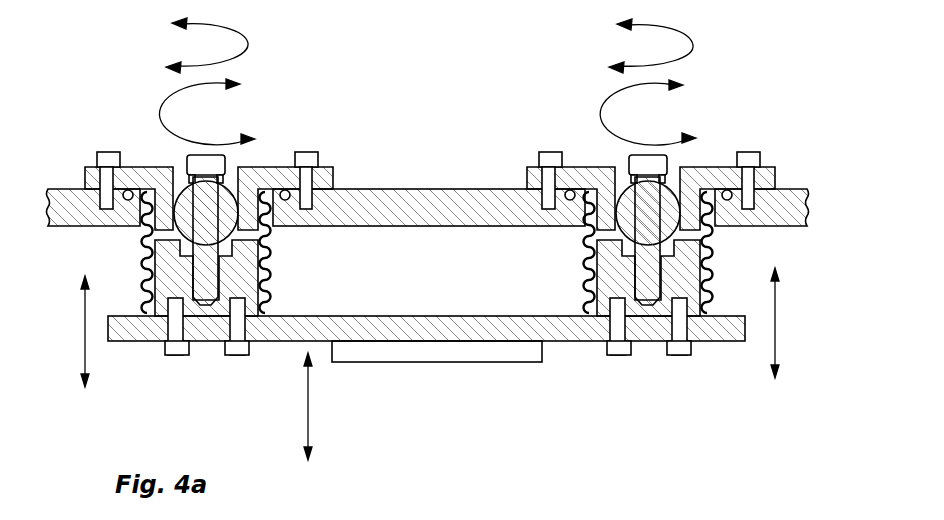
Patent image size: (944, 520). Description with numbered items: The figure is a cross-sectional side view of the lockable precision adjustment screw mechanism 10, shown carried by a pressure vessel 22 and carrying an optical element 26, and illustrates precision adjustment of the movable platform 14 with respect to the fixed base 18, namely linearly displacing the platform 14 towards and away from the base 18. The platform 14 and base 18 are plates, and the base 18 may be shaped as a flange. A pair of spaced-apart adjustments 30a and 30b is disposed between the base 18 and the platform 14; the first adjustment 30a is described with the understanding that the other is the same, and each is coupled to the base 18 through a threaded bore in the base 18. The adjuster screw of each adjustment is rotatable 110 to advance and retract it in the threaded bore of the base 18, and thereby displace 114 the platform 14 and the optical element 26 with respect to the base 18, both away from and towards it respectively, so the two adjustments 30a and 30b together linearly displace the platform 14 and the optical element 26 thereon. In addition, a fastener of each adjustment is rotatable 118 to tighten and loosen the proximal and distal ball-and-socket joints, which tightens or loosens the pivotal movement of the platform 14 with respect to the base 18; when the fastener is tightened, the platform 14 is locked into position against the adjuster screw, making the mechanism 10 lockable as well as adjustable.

The lockable precision adjustment screw mechanism 10 is at (144, 362).
The movable platform 14 is at (417, 327).
The fixed base 18 is at (322, 170).
The pressure vessel 22 is at (420, 222).
The optical element 26 is at (403, 357).
The first adjustment 30a is at (242, 155).
The second adjustment 30b is at (686, 152).
The rotation of the adjuster screw 110 is at (140, 112).
The displacement of the platform 114 is at (84, 343).
The rotation of the fastener 118 is at (250, 43).